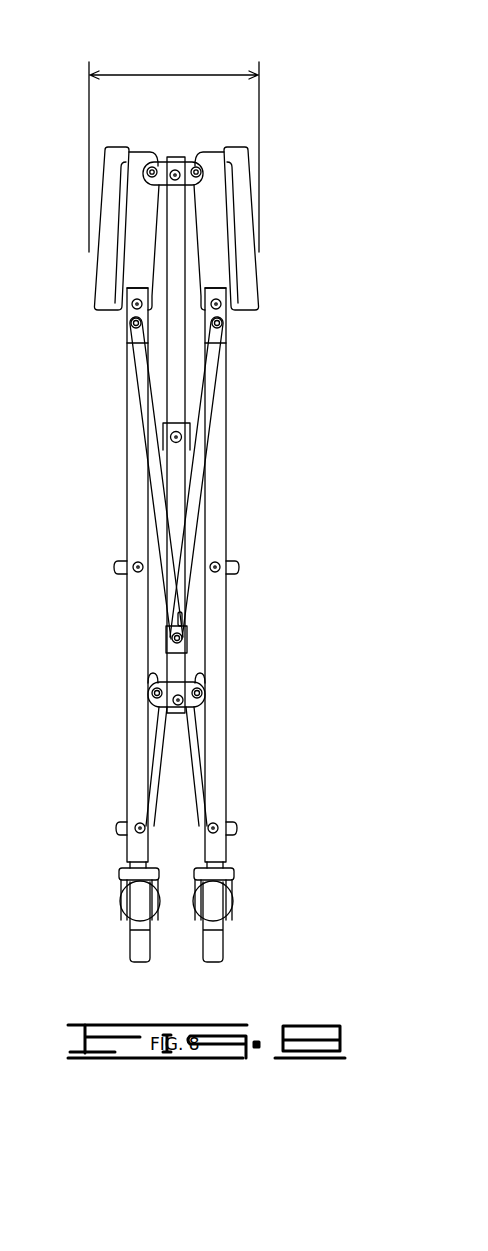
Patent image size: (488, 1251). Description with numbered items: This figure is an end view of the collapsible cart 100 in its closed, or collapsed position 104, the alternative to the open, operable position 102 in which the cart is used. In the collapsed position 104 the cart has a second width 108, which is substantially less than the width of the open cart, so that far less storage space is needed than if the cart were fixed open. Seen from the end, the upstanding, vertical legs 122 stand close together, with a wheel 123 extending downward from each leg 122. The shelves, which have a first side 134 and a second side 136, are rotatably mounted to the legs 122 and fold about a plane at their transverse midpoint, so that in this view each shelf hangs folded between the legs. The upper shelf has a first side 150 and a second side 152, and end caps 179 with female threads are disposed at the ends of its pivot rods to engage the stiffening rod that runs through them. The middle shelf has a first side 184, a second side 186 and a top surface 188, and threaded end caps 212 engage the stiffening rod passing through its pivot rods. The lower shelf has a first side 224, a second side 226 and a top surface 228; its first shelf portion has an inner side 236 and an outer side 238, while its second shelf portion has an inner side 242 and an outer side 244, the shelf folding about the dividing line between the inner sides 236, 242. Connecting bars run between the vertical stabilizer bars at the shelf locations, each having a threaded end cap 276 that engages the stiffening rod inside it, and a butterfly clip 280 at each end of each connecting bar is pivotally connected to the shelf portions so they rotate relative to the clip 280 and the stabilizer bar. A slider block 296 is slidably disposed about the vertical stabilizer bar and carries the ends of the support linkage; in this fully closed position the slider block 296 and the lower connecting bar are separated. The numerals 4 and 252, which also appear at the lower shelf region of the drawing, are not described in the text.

The partial numeral (cut off) 4 is at (0, 267).
The collapsible cart 100 is at (284, 132).
The open, operable position 102 is at (17, 99).
The closed, or collapsed position 104 is at (345, 85).
The second width 108 is at (170, 75).
The legs 122 is at (133, 697).
The wheel 123 is at (137, 950).
The first side 134 is at (281, 569).
The second side 136 is at (78, 572).
The first side 150 is at (230, 310).
The second side 152 is at (127, 310).
The end caps 179 is at (131, 323).
The first side 184 is at (236, 575).
The second side 186 is at (122, 577).
The top surface 188 is at (127, 547).
The threaded end caps 212 is at (133, 567).
The first side 224 is at (233, 833).
The second side 226 is at (124, 834).
The top surface 228 is at (128, 820).
The inner side 236 is at (207, 678).
The outer side 238 is at (238, 848).
The inner side 242 is at (157, 678).
The outer side 244 is at (127, 838).
The pivot pin 252 is at (135, 828).
The threaded end cap 276 is at (177, 168).
The butterfly clip 280 is at (152, 166).
The slider block 296 is at (185, 640).